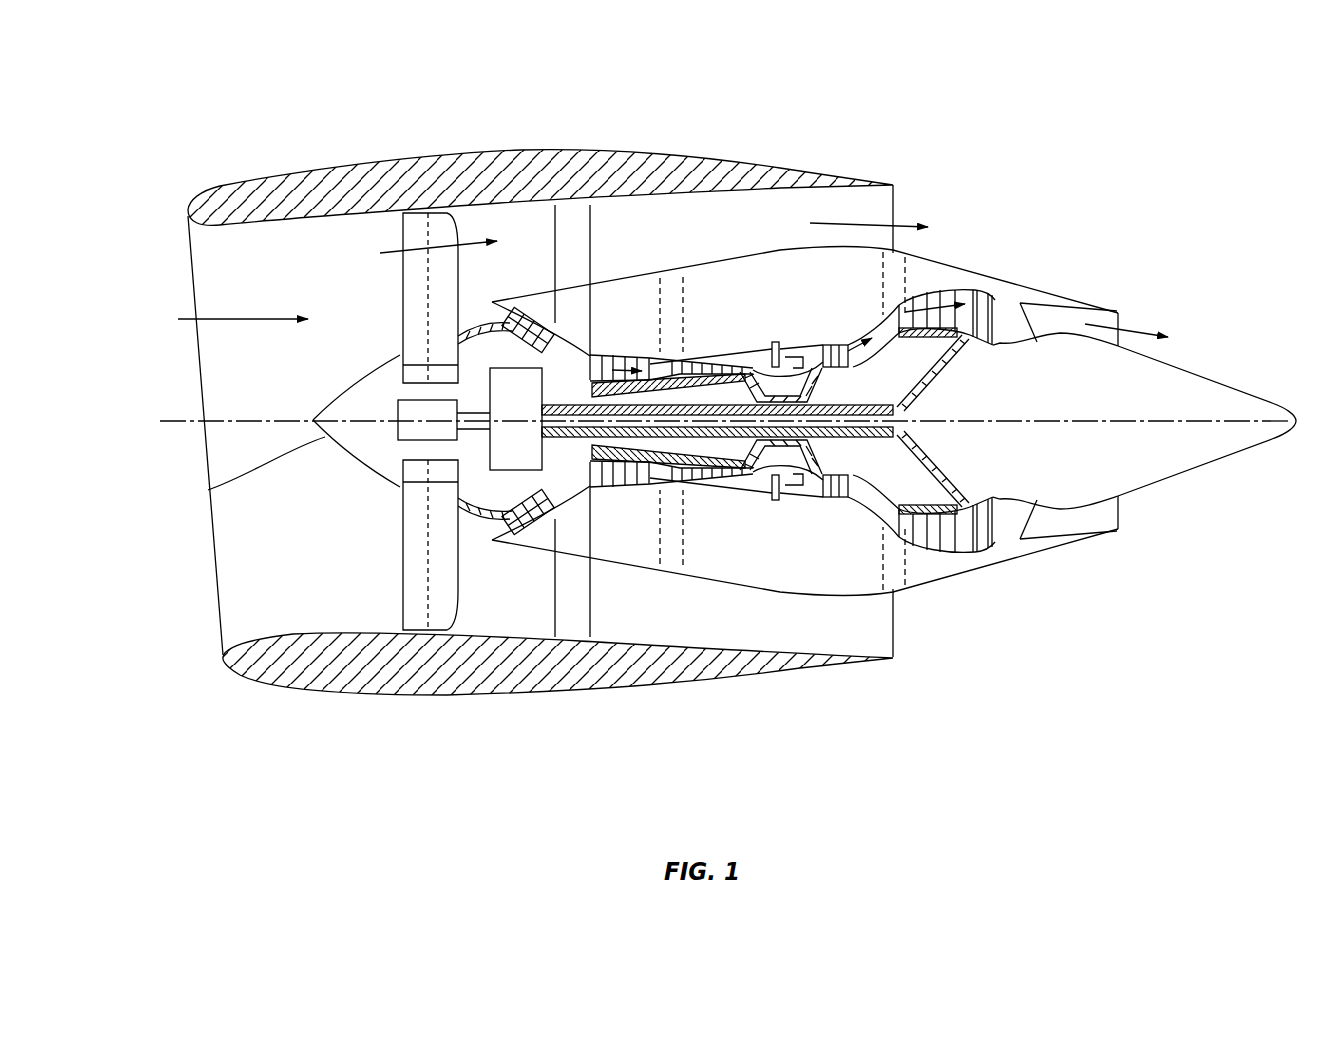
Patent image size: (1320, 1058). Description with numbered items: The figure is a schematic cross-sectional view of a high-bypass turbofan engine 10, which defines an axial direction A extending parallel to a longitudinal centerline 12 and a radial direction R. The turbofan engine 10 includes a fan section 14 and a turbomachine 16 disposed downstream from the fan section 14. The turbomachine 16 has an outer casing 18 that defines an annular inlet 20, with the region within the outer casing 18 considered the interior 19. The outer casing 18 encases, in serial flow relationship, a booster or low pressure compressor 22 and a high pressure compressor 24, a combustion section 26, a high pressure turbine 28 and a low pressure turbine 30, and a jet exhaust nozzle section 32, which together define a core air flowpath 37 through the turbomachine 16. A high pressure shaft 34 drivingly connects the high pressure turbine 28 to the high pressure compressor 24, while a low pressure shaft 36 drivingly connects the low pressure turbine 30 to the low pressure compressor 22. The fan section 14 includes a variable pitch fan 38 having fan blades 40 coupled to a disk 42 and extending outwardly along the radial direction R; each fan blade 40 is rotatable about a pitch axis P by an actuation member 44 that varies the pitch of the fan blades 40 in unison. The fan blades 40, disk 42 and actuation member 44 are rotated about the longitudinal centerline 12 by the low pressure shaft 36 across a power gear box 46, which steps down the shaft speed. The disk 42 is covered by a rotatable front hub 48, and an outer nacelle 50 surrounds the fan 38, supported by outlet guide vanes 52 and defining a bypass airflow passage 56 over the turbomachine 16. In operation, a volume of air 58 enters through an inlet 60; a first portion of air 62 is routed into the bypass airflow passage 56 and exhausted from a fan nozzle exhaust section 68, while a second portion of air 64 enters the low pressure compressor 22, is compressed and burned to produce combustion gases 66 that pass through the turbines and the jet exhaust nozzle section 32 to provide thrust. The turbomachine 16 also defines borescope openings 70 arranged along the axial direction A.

The turbofan engine 10 is at (702, 413).
The longitudinal centerline 12 is at (1060, 415).
The fan section 14 is at (360, 238).
The turbomachine 16 is at (700, 258).
The outer casing 18 is at (750, 587).
The interior 19 is at (882, 572).
The annular inlet 20 is at (492, 526).
The low pressure compressor 22 is at (553, 500).
The high pressure compressor 24 is at (620, 482).
The combustion section 26 is at (792, 494).
The high pressure turbine 28 is at (862, 492).
The low pressure turbine 30 is at (976, 548).
The jet exhaust nozzle section 32 is at (1036, 533).
The high pressure shaft 34 is at (822, 377).
The low pressure shaft 36 is at (920, 383).
The core air flowpath 37 is at (572, 497).
The variable pitch fan 38 is at (364, 478).
The fan blades 40 is at (403, 568).
The disk 42 is at (418, 375).
The actuation member 44 is at (398, 401).
The power gear box 46 is at (548, 392).
The front hub 48 is at (208, 490).
The outer nacelle 50 is at (446, 698).
The outlet guide vanes 52 is at (596, 232).
The bypass airflow passage 56 is at (722, 239).
The volume of air 58 is at (240, 315).
The inlet 60 is at (220, 636).
The first portion of air 62 is at (418, 247).
The second portion of air 64 is at (510, 313).
The combustion gases 66 is at (930, 302).
The fan nozzle exhaust section 68 is at (882, 212).
The borescope openings 70 is at (655, 313).
The pitch axis P is at (486, 330).
The radial direction R is at (113, 279).
The axial direction A is at (784, 752).